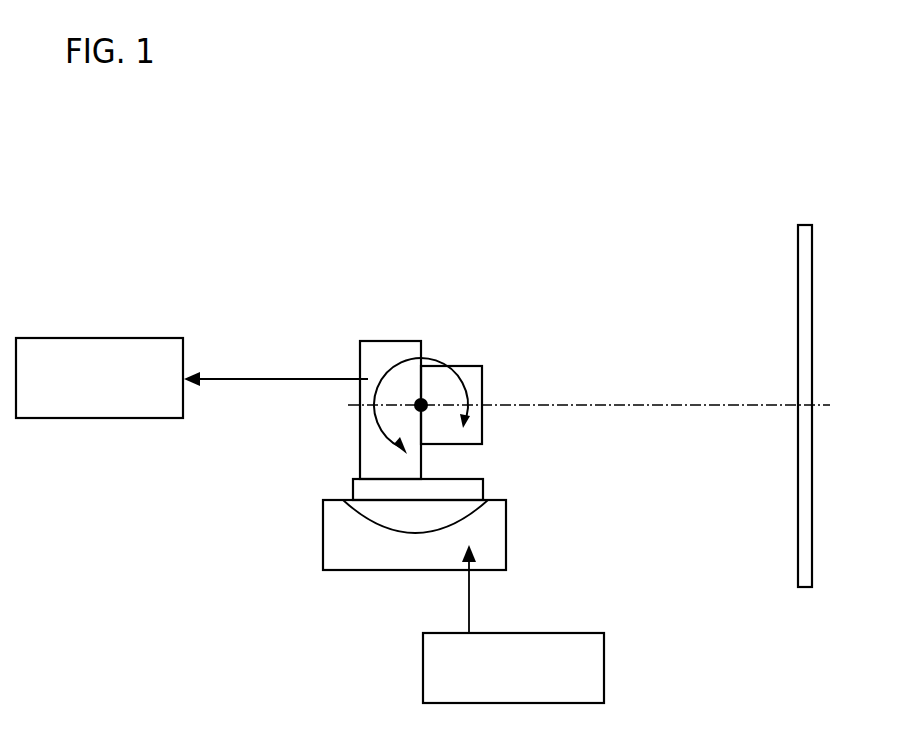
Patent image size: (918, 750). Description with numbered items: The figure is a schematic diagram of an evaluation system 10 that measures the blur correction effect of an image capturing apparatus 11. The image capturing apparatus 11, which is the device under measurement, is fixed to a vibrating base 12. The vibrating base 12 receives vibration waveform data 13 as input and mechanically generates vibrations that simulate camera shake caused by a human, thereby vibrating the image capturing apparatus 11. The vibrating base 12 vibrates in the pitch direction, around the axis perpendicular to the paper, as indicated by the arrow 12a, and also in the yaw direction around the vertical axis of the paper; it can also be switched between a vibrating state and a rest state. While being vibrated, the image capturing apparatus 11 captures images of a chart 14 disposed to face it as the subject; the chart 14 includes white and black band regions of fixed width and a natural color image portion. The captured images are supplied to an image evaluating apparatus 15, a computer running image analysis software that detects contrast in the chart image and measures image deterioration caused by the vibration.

The evaluation system 10 is at (545, 182).
The image capturing apparatus 11 is at (367, 352).
The vibrating base 12 is at (328, 552).
The arrow 12a is at (435, 358).
The vibration waveform data 13 is at (552, 633).
The chart 14 is at (798, 262).
The image evaluating apparatus 15 is at (130, 338).